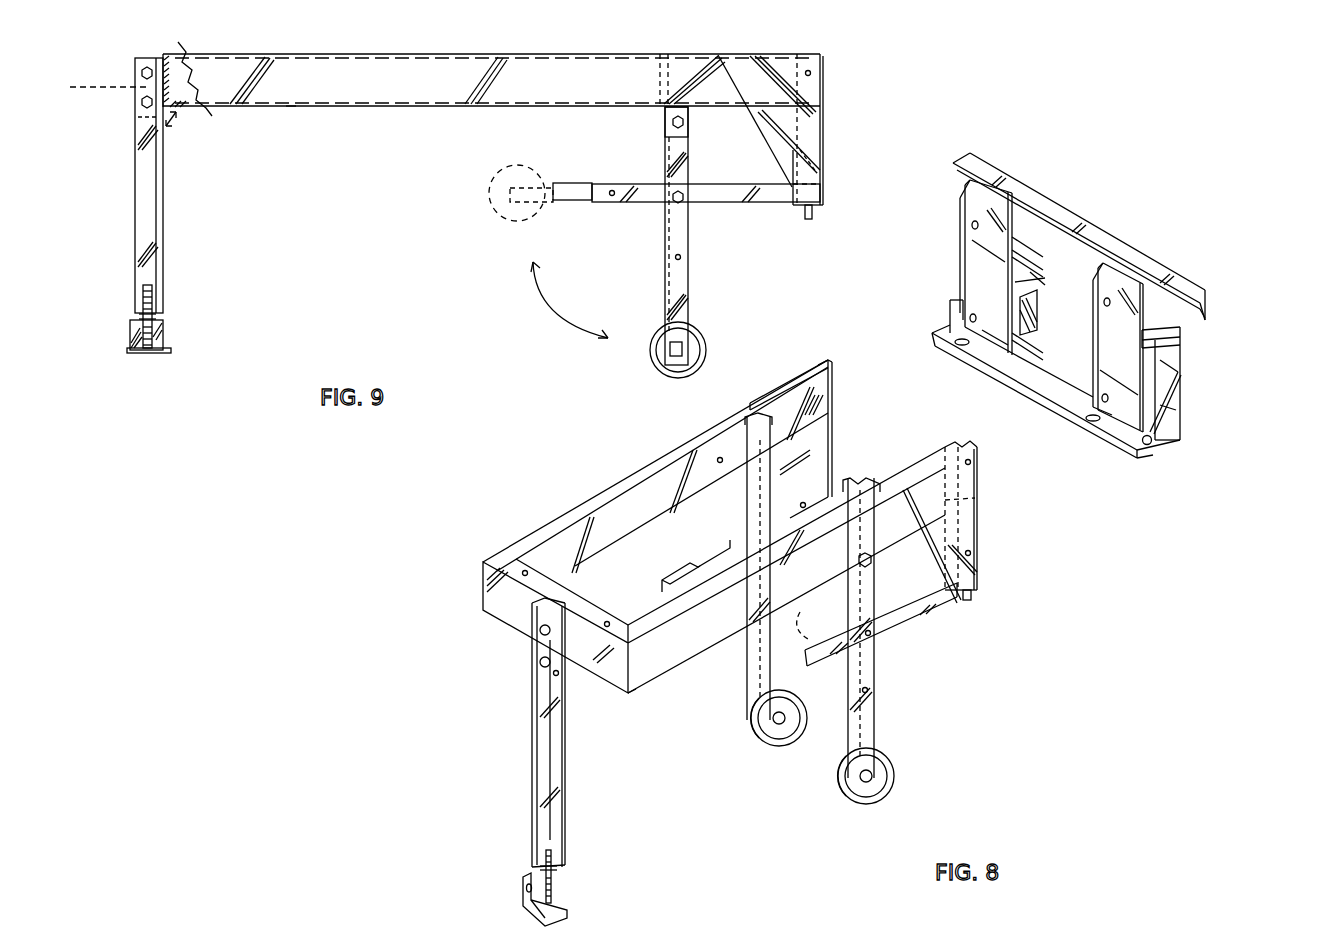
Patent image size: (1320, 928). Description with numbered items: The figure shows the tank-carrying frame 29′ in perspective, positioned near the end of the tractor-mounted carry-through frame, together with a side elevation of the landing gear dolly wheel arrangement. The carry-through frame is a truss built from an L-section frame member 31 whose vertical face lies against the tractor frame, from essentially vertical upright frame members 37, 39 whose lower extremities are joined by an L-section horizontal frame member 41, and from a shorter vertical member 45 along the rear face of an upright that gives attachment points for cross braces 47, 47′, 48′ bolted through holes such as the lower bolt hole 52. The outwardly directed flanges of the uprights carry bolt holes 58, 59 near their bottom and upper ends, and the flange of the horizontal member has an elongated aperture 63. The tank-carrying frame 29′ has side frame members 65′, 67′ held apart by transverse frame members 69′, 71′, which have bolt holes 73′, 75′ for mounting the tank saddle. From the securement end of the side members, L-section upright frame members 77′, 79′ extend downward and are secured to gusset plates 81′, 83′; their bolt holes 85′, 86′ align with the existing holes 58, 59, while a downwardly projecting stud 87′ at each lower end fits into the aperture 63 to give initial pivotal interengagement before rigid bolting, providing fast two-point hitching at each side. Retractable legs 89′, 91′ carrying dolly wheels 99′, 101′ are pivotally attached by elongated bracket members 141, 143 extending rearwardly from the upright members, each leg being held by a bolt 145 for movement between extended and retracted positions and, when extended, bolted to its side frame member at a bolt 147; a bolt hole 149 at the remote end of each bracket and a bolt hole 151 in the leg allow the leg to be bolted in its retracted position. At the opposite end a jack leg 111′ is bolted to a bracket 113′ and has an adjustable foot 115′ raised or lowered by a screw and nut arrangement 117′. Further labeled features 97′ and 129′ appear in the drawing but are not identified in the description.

In FIG. 8, the tank-carrying frame 29′ is at (630, 695).
In FIG. 8, the L-section frame member 31 is at (985, 162).
In FIG. 8, the upright frame member 37 is at (990, 185).
In FIG. 8, the upright frame member 39 is at (1110, 262).
In FIG. 8, the horizontal frame member 41 is at (938, 342).
In FIG. 8, the shorter vertical member 45 is at (1151, 440).
In FIG. 8, the cross brace 47 is at (1040, 245).
In FIG. 8, the cross brace 47′ is at (1160, 330).
In FIG. 8, the cross brace 48′ is at (1172, 385).
In FIG. 8, the bolt hole 52 is at (1160, 408).
In FIG. 8, the bolt hole 58 is at (969, 317).
In FIG. 8, the bolt hole 59 is at (978, 225).
In FIG. 8, the elongated aperture 63 is at (955, 341).
In FIG. 9, the side frame member 65′ is at (200, 120).
In FIG. 8, the side frame member 65′ is at (600, 497).
In FIG. 9, the side frame member 67′ is at (292, 108).
In FIG. 8, the side frame member 67′ is at (630, 697).
In FIG. 8, the transverse frame member 69′ is at (717, 460).
In FIG. 9, the transverse frame member 71′ is at (163, 55).
In FIG. 8, the transverse frame member 71′ is at (483, 590).
In FIG. 8, the bolt hole 73′ is at (730, 470).
In FIG. 8, the bolt hole 75′ is at (522, 573).
In FIG. 8, the upright frame member 77′ is at (833, 383).
In FIG. 9, the upright frame member 79′ is at (823, 108).
In FIG. 8, the upright frame member 79′ is at (978, 508).
In FIG. 8, the gusset plate 81′ is at (790, 400).
In FIG. 9, the gusset plate 83′ is at (823, 133).
In FIG. 8, the gusset plate 83′ is at (978, 545).
In FIG. 9, the bolt hole 85′ is at (819, 160).
In FIG. 8, the bolt hole 85′ is at (978, 560).
In FIG. 9, the bolt hole 86′ is at (811, 73).
In FIG. 8, the bolt hole 86′ is at (972, 463).
In FIG. 9, the stud 87′ is at (813, 211).
In FIG. 8, the stud 87′ is at (972, 600).
In FIG. 8, the retractable leg 89′ is at (750, 650).
In FIG. 9, the retractable leg 91′ is at (689, 270).
In FIG. 8, the retractable leg 91′ is at (875, 725).
In FIG. 9, the bracket 97′ is at (655, 54).
In FIG. 8, the bracket 97′ is at (855, 478).
In FIG. 8, the dolly wheel 99′ is at (756, 738).
In FIG. 9, the dolly wheel 101′ is at (690, 330).
In FIG. 8, the dolly wheel 101′ is at (894, 784).
In FIG. 9, the jack leg 111′ is at (135, 205).
In FIG. 8, the jack leg 111′ is at (532, 787).
In FIG. 9, the bracket 113′ is at (94, 86).
In FIG. 8, the bracket 113′ is at (540, 620).
In FIG. 9, the adjustable foot 115′ is at (130, 335).
In FIG. 8, the adjustable foot 115′ is at (523, 895).
In FIG. 9, the screw and nut arrangement 117′ is at (141, 310).
In FIG. 8, the screw and nut arrangement 117′ is at (540, 868).
In FIG. 9, the bolt 129′ is at (142, 73).
In FIG. 8, the bolt 129′ is at (540, 630).
In FIG. 8, the bracket member 141 is at (730, 530).
In FIG. 8, the bracket member 143 is at (945, 605).
In FIG. 9, the bolt 145 is at (673, 197).
In FIG. 8, the bolt 145 is at (870, 640).
In FIG. 9, the bolt 147 is at (673, 122).
In FIG. 8, the bolt 147 is at (872, 562).
In FIG. 9, the bolt hole 149 is at (612, 196).
In FIG. 8, the bolt hole 149 is at (664, 586).
In FIG. 9, the bolt hole 151 is at (681, 257).
In FIG. 8, the bolt hole 151 is at (868, 690).